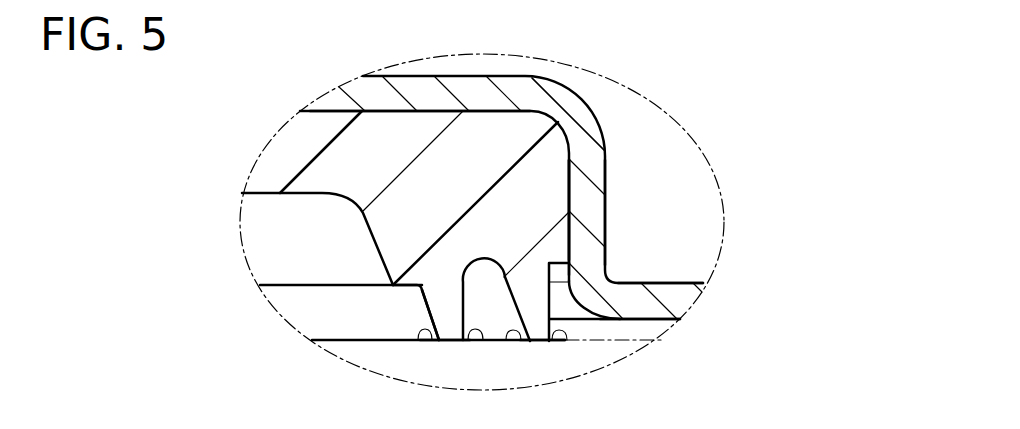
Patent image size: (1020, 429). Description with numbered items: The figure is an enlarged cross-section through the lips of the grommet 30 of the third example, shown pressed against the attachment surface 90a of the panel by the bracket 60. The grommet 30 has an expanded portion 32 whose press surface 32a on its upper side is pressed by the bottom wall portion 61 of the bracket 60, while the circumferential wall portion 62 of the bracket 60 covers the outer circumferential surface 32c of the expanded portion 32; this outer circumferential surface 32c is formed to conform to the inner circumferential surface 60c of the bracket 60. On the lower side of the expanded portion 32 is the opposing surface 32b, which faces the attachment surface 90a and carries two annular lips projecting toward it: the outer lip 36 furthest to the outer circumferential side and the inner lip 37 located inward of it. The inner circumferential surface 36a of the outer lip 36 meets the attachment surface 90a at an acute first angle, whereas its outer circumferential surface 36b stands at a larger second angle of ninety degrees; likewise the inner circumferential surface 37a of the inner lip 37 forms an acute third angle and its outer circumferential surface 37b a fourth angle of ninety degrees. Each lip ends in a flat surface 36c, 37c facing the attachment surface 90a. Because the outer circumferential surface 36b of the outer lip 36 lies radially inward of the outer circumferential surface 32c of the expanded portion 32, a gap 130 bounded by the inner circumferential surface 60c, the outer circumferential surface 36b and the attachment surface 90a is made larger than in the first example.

The grommet 30 is at (572, 149).
The expanded portion 32 is at (531, 128).
The press surface 32a is at (475, 76).
The opposing surface 32b is at (258, 193).
The outer circumferential surface 32c is at (571, 196).
The outer lip 36 is at (543, 321).
The inner circumferential surface 36a is at (512, 305).
The outer circumferential surface 36b is at (570, 280).
The flat surface 36c is at (533, 342).
The inner lip 37 is at (443, 314).
The inner circumferential surface 37a is at (418, 298).
The outer circumferential surface 37b is at (466, 302).
The flat surface 37c is at (450, 341).
The bracket 60 is at (597, 114).
The inner circumferential surface 60c is at (562, 174).
The bottom wall portion 61 is at (408, 76).
The circumferential wall portion 62 is at (607, 215).
The attachment surface 90a is at (655, 342).
The gap 130 is at (565, 302).